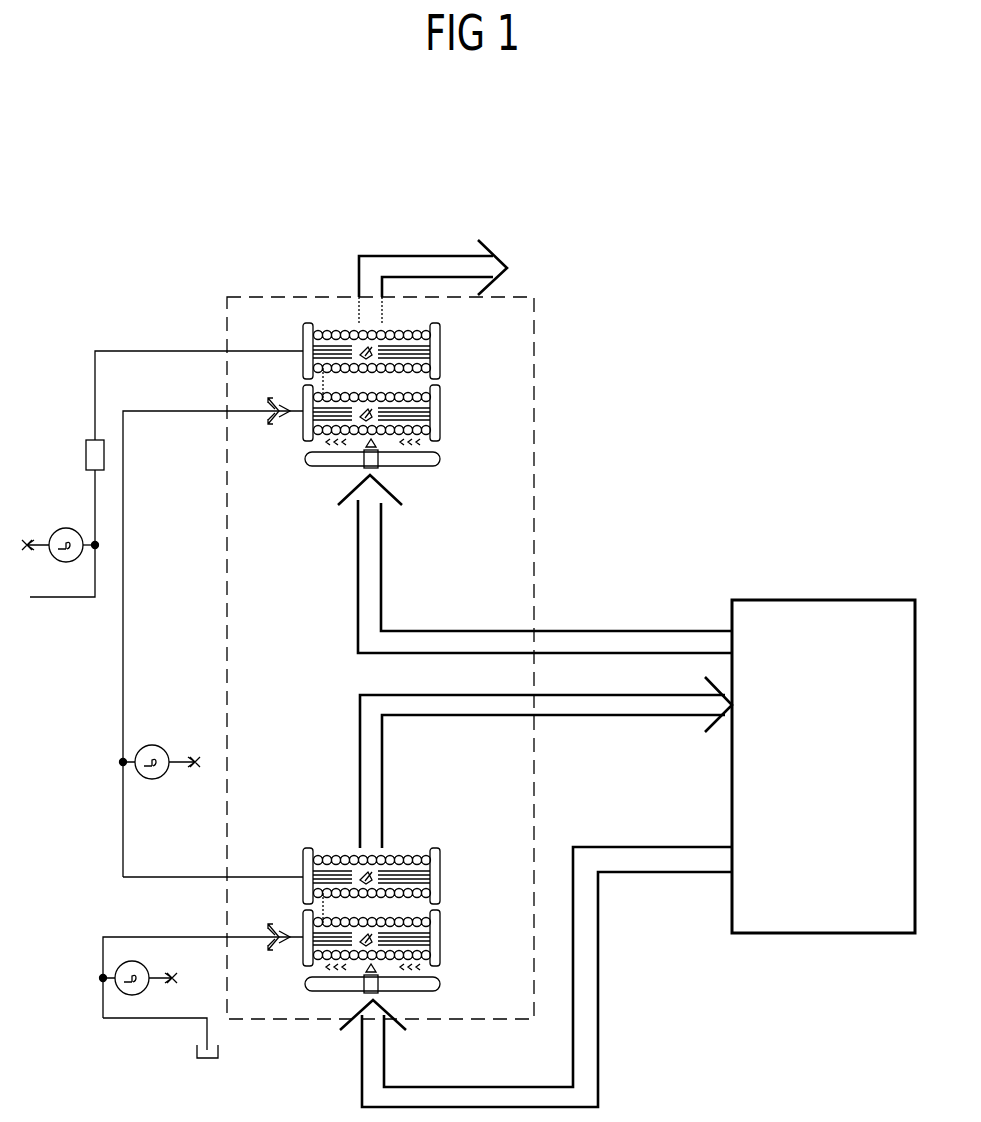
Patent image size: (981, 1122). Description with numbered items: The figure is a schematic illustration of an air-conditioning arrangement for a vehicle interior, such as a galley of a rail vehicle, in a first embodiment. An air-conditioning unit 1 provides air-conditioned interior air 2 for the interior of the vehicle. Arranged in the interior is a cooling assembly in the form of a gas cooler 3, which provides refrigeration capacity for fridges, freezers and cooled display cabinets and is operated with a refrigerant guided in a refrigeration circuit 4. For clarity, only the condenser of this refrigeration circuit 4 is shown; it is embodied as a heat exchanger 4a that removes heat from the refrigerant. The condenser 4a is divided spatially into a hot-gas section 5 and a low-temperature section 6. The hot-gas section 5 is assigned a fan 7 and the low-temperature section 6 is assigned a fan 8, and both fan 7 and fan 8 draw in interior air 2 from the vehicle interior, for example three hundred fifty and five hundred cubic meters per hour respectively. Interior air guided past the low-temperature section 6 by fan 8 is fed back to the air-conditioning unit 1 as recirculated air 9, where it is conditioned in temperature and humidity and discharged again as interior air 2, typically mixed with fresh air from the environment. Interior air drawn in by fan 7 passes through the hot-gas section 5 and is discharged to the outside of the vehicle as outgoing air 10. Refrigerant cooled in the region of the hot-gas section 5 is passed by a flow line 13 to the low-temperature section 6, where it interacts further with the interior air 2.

The air-conditioning unit 1 is at (830, 688).
The interior air 2 is at (643, 631).
The gas cooler 3 is at (155, 268).
The refrigeration circuit 4 is at (205, 351).
The heat exchanger 4a is at (534, 300).
The hot-gas section 5 is at (293, 325).
The low-temperature section 6 is at (292, 848).
The fan 7 is at (440, 458).
The fan 8 is at (440, 984).
The recirculated air 9 is at (605, 715).
The outgoing air 10 is at (428, 256).
The flow line 13 is at (123, 672).